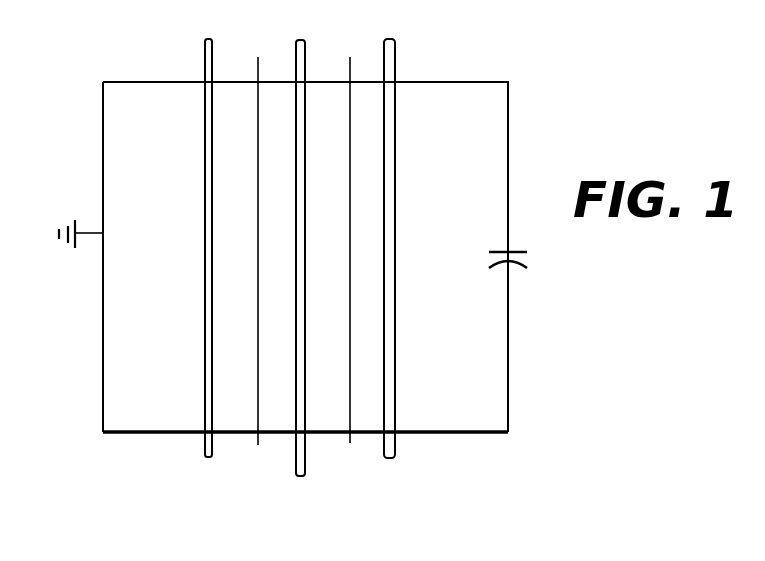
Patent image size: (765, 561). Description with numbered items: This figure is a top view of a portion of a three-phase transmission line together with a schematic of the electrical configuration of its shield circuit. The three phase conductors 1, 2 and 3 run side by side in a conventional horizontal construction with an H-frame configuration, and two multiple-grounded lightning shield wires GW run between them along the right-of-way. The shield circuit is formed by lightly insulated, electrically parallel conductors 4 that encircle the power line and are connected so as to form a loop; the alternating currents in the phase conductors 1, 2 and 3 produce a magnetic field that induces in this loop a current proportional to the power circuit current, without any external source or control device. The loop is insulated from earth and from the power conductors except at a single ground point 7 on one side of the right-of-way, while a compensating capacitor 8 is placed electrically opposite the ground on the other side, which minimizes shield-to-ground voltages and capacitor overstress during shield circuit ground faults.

The phase conductor 1 is at (205, 139).
The phase conductor 2 is at (296, 146).
The phase conductor 3 is at (384, 143).
The electrically parallel conductor 4 is at (103, 345).
The ground point 7 is at (90, 232).
The compensating capacitor 8 is at (520, 252).
The lightning shield wire GW is at (258, 242).